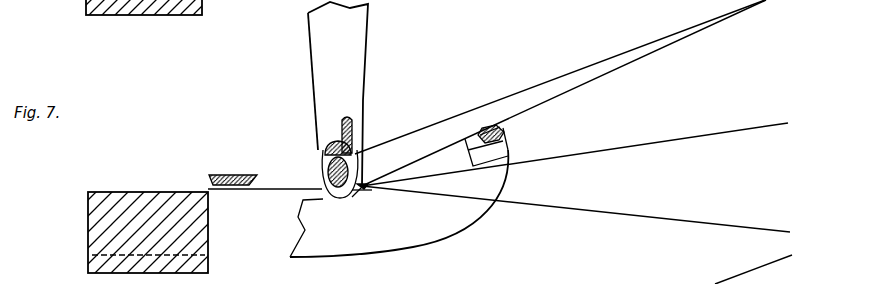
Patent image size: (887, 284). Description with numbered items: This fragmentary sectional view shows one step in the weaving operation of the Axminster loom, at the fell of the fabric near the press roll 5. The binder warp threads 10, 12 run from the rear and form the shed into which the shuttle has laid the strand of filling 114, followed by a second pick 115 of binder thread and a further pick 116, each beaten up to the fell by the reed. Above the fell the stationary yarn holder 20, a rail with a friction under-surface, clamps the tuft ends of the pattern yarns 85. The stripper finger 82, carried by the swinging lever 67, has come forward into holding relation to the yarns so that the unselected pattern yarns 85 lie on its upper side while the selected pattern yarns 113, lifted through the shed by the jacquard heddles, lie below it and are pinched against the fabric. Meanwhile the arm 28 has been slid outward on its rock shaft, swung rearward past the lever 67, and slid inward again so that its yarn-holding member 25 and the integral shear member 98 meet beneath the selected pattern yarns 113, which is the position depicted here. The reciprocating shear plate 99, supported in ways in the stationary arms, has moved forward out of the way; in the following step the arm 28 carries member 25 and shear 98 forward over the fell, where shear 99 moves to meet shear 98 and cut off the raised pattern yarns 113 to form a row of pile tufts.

The press roll 5 is at (100, 242).
The binder warp thread 10 is at (666, 220).
The binder warp thread 12 is at (687, 139).
The yarn holder 20 is at (352, 130).
The yarn-holding member 25 is at (506, 130).
The arm 28 is at (452, 247).
The lever 67 is at (353, 27).
The stripper finger 82 is at (330, 170).
The pattern yarns 85 is at (603, 61).
The shear 98 is at (478, 135).
The shear plate 99 is at (227, 175).
The selected pattern yarns 113 is at (675, 42).
The filling strand 114 is at (363, 185).
The second pick of binder thread 115 is at (357, 193).
The third pick of binder thread 116 is at (365, 190).